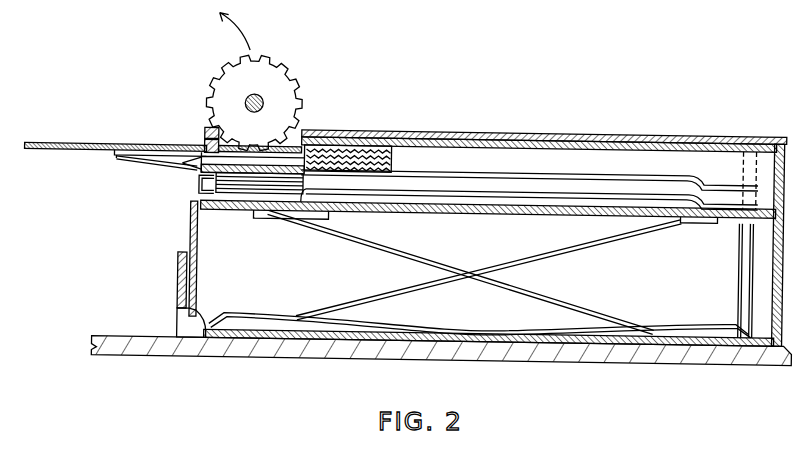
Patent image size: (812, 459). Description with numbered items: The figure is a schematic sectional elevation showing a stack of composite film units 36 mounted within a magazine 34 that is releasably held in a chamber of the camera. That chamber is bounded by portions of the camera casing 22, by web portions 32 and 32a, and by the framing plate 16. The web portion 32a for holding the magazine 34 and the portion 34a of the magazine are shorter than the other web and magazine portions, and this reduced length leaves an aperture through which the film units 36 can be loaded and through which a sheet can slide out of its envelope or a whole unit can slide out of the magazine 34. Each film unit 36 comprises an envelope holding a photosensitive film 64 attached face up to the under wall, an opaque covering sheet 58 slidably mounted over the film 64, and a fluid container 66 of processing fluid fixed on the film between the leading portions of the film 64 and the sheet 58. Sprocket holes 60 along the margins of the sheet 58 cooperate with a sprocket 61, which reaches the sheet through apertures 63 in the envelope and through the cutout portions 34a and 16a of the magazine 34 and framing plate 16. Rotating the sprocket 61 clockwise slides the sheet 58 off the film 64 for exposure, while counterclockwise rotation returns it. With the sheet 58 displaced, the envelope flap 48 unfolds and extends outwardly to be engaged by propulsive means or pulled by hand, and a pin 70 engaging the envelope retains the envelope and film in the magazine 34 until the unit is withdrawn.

The framing plate 16 is at (695, 130).
The portion of framing plate 16a is at (297, 135).
The camera casing 22 is at (352, 351).
The web portion 32 is at (180, 327).
The web portion 32a is at (178, 276).
The magazine 34 is at (578, 140).
The portion of magazine 34a is at (320, 140).
The film units 36 is at (605, 167).
The flap 48 is at (118, 162).
The sheet 58 is at (75, 150).
The sprocket holes 60 is at (148, 149).
The sprocket 61 is at (282, 80).
The apertures 63 is at (201, 137).
The photosensitive film 64 is at (392, 159).
The fluid container 66 is at (165, 169).
The pin 70 is at (740, 258).